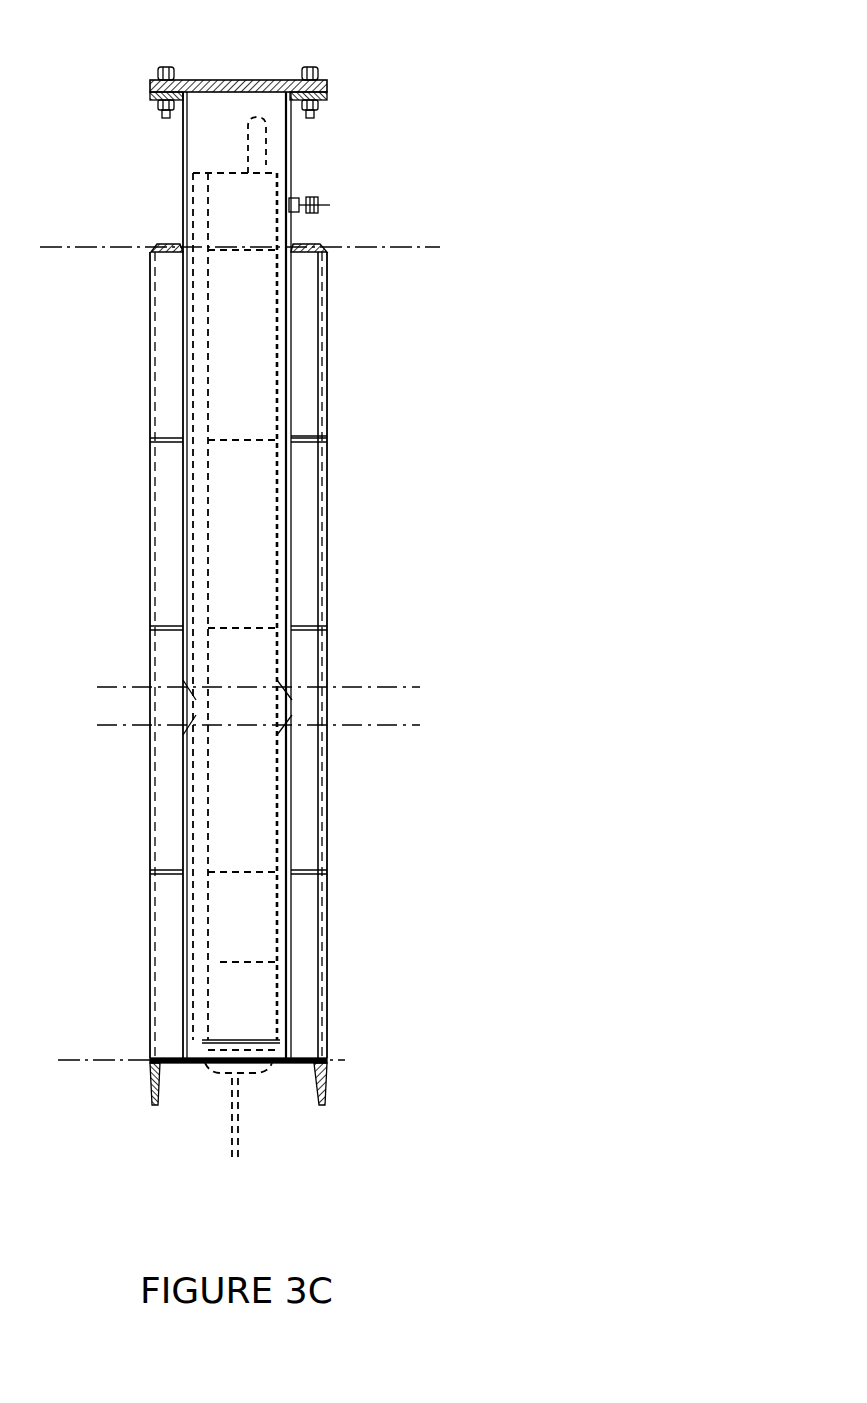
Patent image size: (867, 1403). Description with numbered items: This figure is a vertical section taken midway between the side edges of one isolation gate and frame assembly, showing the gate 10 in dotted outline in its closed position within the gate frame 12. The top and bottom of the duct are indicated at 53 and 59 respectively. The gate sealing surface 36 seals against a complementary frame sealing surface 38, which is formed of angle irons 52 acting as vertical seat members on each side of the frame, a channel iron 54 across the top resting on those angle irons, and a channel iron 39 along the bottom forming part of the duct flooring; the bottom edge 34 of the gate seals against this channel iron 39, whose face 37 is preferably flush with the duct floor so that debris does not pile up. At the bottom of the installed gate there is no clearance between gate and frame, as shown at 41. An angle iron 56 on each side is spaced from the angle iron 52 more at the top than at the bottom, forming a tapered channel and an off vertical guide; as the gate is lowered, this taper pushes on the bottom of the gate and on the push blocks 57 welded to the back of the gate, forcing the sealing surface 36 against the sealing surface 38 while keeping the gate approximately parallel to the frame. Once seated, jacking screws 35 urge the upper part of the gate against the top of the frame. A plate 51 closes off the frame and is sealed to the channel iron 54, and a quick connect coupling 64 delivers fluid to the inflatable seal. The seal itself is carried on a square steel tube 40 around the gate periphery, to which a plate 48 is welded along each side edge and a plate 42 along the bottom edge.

The gate 10 is at (218, 500).
The gate frame 12 is at (150, 330).
The bottom edge 34 is at (262, 1065).
The jacking screws 35 is at (319, 195).
The sealing surface 36 is at (197, 553).
The face 37 is at (293, 1058).
The frame sealing surface 38 is at (188, 597).
The channel iron 39 is at (325, 1103).
The square steel tube 40 is at (224, 166).
The no clearance location 41 is at (278, 1022).
The plate 42 is at (205, 1040).
The plate 48 is at (182, 220).
The plate 51 is at (268, 92).
The angle irons 52 is at (160, 407).
The top of the duct 53 is at (440, 247).
The channel iron 54 is at (185, 172).
The angle iron 56 is at (300, 425).
The push blocks 57 is at (283, 313).
The bottom of the duct 59 is at (120, 1050).
The quick connect coupling 64 is at (290, 136).